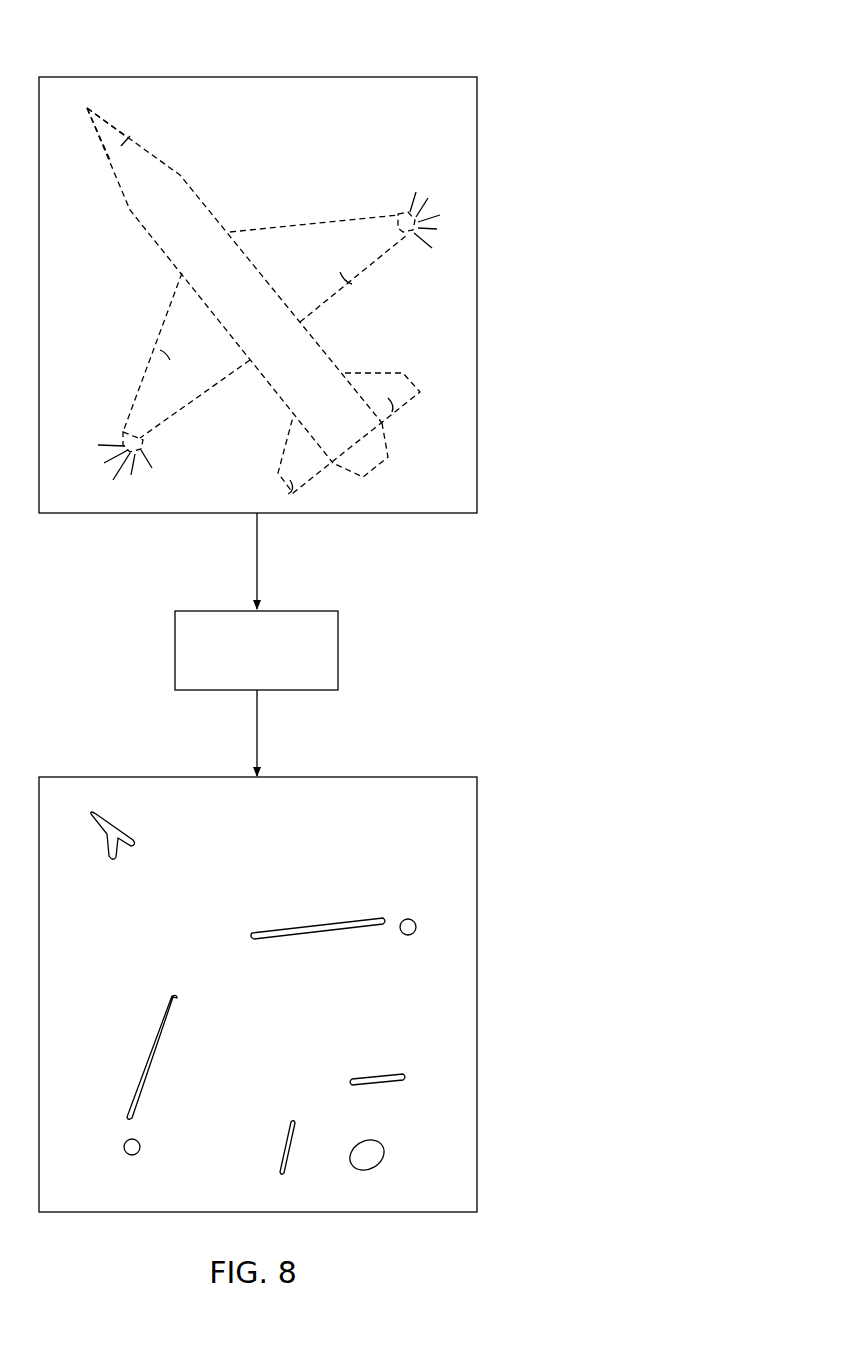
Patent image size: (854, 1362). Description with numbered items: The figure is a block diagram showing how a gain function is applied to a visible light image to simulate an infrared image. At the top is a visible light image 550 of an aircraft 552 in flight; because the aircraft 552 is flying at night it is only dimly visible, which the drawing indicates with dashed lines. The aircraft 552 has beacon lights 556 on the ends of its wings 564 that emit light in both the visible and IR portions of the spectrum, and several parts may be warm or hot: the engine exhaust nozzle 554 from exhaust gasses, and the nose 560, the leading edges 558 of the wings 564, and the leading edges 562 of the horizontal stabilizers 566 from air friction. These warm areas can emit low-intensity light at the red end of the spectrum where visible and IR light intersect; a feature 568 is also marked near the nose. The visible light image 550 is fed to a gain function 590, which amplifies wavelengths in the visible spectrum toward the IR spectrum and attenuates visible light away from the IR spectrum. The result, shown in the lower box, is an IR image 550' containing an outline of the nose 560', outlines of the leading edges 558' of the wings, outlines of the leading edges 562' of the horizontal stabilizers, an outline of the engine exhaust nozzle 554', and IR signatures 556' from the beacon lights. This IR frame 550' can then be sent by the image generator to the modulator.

The visible light image 550 is at (285, 270).
The aircraft 552 is at (183, 171).
The engine exhaust nozzle 554 is at (383, 461).
The beacon lights 556 is at (249, 313).
The leading edges of the wings 558 is at (252, 302).
The nose 560 is at (117, 122).
The leading edges of the horizontal stabilizers 562 is at (325, 411).
The wings 564 is at (346, 278).
The horizontal stabilizers 566 is at (390, 402).
The nose feature 568 is at (127, 137).
The gain function 590 is at (338, 631).
The IR image 550' is at (286, 967).
The outline of the engine exhaust nozzle 554' is at (398, 1149).
The IR signatures from the beacon lights 556' is at (262, 1035).
The outlines of the leading edges of the wings 558' is at (237, 992).
The outline of the nose 560' is at (132, 821).
The outlines of the leading edges of the horizontal stabilizers 562' is at (309, 1096).